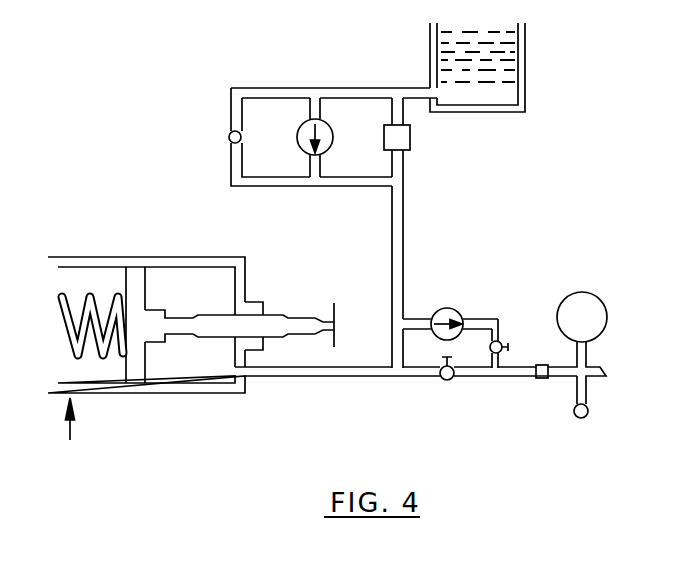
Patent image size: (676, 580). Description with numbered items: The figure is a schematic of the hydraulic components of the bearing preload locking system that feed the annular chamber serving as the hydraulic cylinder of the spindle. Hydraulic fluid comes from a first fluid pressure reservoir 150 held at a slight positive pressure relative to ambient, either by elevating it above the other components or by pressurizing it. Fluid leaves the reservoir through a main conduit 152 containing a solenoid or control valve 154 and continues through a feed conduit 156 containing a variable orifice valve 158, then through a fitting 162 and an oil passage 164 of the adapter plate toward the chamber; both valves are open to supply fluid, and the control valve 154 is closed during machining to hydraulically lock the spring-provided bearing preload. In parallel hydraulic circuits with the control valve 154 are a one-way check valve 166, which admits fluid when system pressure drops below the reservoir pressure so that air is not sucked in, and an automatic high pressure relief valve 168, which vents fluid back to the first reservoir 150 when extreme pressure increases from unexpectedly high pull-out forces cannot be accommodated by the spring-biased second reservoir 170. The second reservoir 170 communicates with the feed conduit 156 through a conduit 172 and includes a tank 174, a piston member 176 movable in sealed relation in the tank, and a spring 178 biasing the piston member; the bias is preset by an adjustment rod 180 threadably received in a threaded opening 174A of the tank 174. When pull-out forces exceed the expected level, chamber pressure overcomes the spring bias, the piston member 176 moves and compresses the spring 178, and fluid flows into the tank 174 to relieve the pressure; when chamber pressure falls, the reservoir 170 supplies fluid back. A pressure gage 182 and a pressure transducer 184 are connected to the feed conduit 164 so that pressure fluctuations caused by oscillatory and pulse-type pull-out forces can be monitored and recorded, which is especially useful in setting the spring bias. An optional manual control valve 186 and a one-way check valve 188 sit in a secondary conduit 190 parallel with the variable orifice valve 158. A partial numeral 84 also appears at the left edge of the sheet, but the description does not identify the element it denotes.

The actuator assembly 84 is at (124, 309).
The first fluid pressure reservoir 150 is at (501, 78).
The main conduit 152 is at (400, 242).
The control valve 154 is at (406, 138).
The feed conduit 156 is at (517, 376).
The variable orifice valve 158 is at (449, 381).
The fitting 162 is at (537, 367).
The oil passage 164 is at (600, 366).
The one-way check valve 166 is at (325, 143).
The automatic high pressure relief valve 168 is at (229, 137).
The second reservoir 170 is at (70, 440).
The conduit 172 is at (301, 378).
The tank 174 is at (160, 393).
The threaded opening 174A is at (250, 302).
The piston member 176 is at (138, 280).
The spring 178 is at (62, 300).
The adjustment rod 180 is at (275, 318).
The pressure gage 182 is at (590, 315).
The pressure transducer 184 is at (580, 420).
The manual control valve 186 is at (500, 340).
The one-way check valve 188 is at (449, 313).
The secondary conduit 190 is at (418, 327).